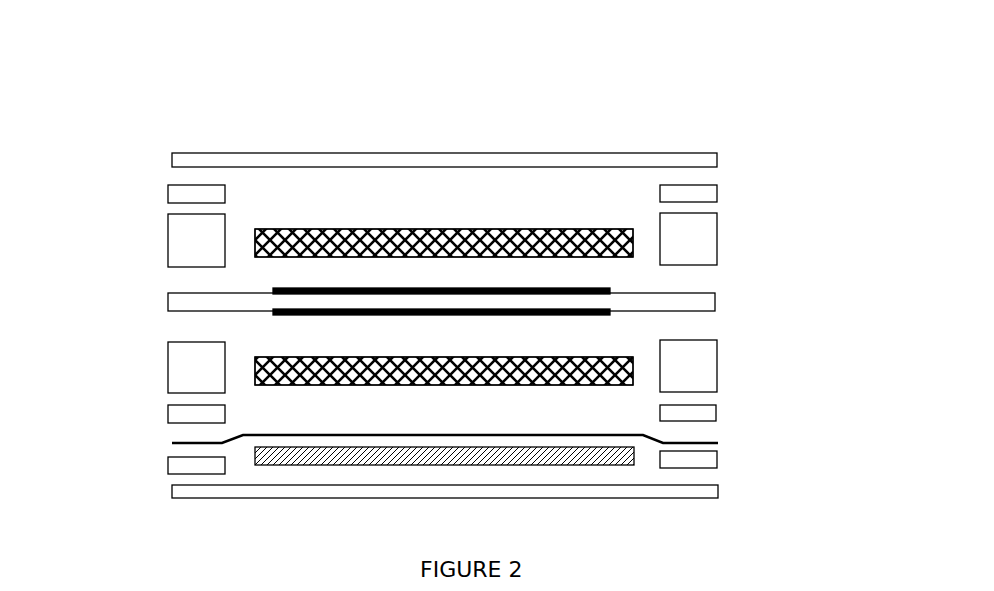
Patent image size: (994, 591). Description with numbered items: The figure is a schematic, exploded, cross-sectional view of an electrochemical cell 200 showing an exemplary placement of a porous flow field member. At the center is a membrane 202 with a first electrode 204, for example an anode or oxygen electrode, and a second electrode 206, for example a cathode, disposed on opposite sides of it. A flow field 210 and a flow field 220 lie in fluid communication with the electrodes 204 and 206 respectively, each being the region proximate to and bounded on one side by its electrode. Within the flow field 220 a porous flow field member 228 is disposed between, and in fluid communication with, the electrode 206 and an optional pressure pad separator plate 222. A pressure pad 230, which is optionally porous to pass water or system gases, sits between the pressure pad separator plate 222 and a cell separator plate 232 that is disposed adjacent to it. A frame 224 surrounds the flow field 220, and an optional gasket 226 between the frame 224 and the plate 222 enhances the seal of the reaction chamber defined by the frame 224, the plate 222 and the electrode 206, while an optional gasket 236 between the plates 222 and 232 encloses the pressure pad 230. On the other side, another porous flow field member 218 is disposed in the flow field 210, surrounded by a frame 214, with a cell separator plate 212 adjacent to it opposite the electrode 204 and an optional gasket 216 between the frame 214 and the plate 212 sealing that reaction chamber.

The cell 200 is at (148, 67).
The membrane 202 is at (715, 301).
The first electrode 204 is at (275, 289).
The second electrode 206 is at (283, 318).
The flow field 210 is at (478, 215).
The cell separator plate 212 is at (717, 159).
The frame 214 is at (717, 239).
The gasket 216 is at (168, 195).
The porous flow field member 218 is at (500, 229).
The flow field 220 is at (478, 420).
The pressure pad separator plate 222 is at (702, 442).
The frame 224 is at (717, 366).
The gasket 226 is at (168, 415).
The porous flow field member 228 is at (470, 357).
The pressure pad 230 is at (634, 464).
The cell separator plate 232 is at (718, 490).
The gasket 236 is at (168, 466).